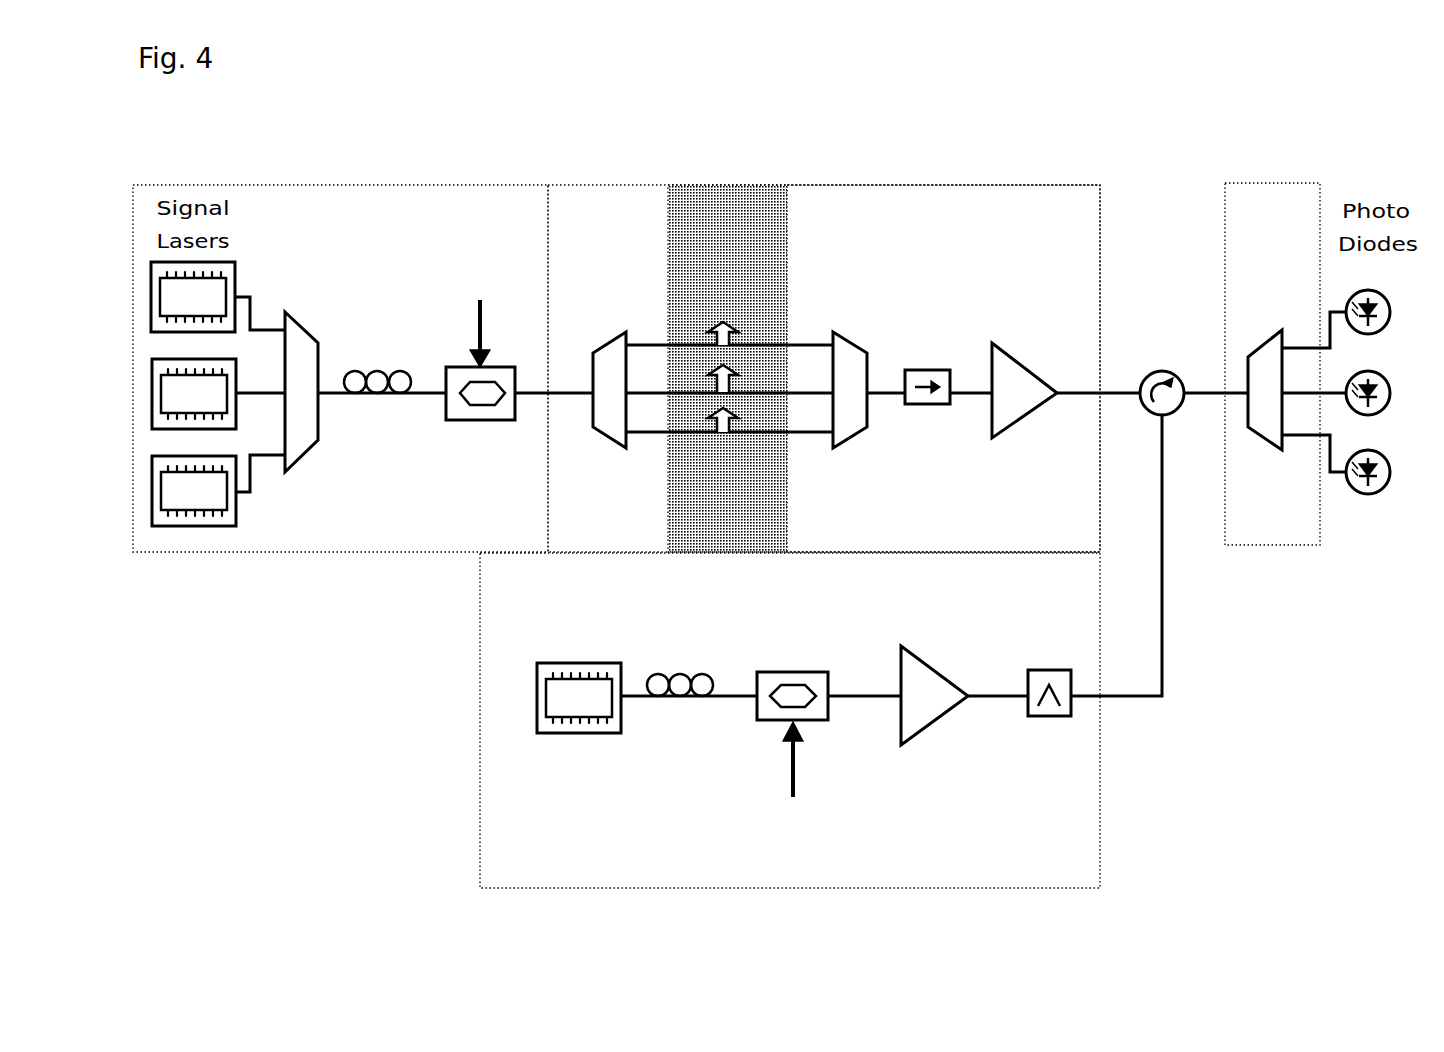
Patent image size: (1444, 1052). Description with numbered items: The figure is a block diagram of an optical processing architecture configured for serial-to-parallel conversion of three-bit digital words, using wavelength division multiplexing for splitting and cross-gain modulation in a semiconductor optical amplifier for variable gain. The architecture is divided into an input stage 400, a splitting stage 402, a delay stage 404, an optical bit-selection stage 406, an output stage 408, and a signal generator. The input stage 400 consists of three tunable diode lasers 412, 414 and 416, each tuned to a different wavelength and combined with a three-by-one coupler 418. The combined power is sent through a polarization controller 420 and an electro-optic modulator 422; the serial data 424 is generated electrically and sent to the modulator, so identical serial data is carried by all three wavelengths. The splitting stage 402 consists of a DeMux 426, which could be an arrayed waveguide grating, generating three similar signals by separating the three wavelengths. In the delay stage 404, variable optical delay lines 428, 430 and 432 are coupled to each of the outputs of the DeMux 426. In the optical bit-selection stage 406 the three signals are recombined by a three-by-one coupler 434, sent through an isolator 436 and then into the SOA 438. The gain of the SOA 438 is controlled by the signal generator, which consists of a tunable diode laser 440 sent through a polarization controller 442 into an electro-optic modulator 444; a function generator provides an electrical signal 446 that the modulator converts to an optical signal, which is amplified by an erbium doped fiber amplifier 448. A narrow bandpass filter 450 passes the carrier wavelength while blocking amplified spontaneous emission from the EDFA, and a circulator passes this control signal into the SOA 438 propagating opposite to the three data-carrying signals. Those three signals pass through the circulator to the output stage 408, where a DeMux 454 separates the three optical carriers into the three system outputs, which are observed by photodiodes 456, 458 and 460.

The input stage 400 is at (463, 187).
The splitting stage 402 is at (577, 185).
The delay stage 404 is at (732, 185).
The optical bit-selection stage 406 is at (1050, 185).
The output stage 408 is at (1243, 182).
The tunable diode laser 412 is at (192, 528).
The tunable diode laser 414 is at (153, 427).
The tunable diode laser 416 is at (238, 262).
The 3×1 coupler 418 is at (295, 315).
The polarization controller 420 is at (375, 366).
The electro-optic modulator 422 is at (445, 420).
The serial data 424 is at (470, 330).
The DeMux 426 is at (615, 335).
The variable optical delay line 428 is at (716, 326).
The variable optical delay line 430 is at (732, 368).
The variable optical delay line 432 is at (720, 440).
The 3×1 coupler 434 is at (842, 332).
The isolator 436 is at (930, 366).
The SOA 438 is at (998, 340).
The tunable diode laser 440 is at (533, 696).
The polarization controller 442 is at (678, 672).
The electro-optic modulator 444 is at (832, 724).
The electrical signal 446 is at (790, 760).
The erbium doped fiber amplifier 448 is at (920, 736).
The narrow bandpass filter 450 is at (1050, 722).
The DeMux 454 is at (1270, 340).
The photodiode 456 is at (1350, 296).
The photodiode 458 is at (1388, 418).
The photodiode 460 is at (1368, 500).